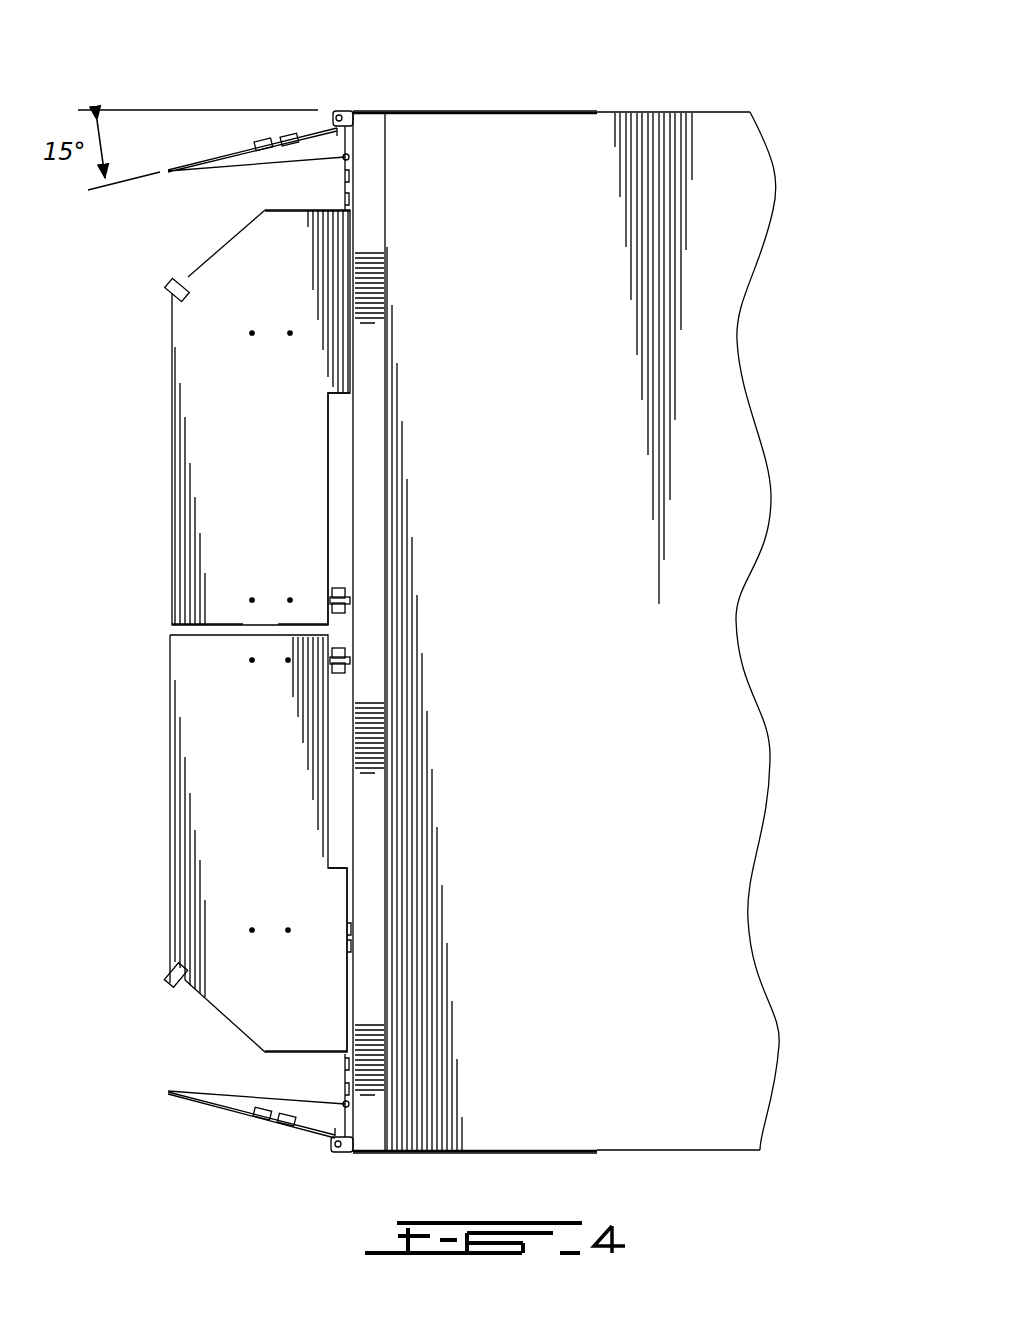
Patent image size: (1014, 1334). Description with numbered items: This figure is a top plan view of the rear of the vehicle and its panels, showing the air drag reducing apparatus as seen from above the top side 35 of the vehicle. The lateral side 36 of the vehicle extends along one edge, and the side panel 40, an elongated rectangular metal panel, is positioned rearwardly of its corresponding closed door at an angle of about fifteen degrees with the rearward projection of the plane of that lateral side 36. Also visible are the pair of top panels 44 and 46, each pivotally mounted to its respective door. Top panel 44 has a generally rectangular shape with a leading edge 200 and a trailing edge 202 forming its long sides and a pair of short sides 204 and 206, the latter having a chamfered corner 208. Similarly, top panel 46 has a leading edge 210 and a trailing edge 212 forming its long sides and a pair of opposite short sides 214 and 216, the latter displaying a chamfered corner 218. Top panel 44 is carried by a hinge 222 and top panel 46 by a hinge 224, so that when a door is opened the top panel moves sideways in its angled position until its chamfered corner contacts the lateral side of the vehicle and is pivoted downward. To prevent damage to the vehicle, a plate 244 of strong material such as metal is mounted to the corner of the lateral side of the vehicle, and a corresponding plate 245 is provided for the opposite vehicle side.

The top side of the vehicle 35 is at (714, 196).
The lateral side of the vehicle 36 is at (621, 112).
The side panel 40 is at (221, 152).
The top panel 44 is at (293, 399).
The top panel 46 is at (293, 863).
The leading edge 200 is at (328, 507).
The trailing edge 202 is at (170, 535).
The short side 204 is at (243, 625).
The short side 206 is at (307, 208).
The chamfered corner 208 is at (217, 246).
The leading edge 210 is at (328, 802).
The trailing edge 212 is at (170, 910).
The short side 214 is at (278, 625).
The short side 216 is at (300, 1053).
The chamfered corner 218 is at (227, 1020).
The hinge 222 is at (350, 602).
The hinge 224 is at (350, 663).
The plate 244 is at (451, 110).
The plate 245 is at (467, 1153).